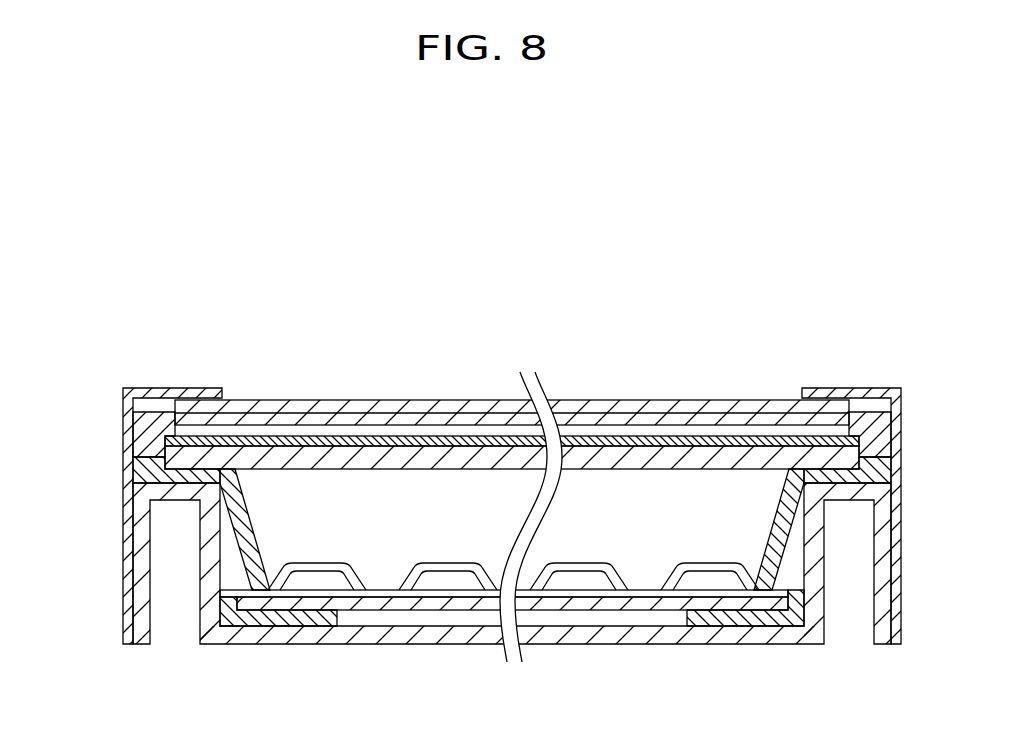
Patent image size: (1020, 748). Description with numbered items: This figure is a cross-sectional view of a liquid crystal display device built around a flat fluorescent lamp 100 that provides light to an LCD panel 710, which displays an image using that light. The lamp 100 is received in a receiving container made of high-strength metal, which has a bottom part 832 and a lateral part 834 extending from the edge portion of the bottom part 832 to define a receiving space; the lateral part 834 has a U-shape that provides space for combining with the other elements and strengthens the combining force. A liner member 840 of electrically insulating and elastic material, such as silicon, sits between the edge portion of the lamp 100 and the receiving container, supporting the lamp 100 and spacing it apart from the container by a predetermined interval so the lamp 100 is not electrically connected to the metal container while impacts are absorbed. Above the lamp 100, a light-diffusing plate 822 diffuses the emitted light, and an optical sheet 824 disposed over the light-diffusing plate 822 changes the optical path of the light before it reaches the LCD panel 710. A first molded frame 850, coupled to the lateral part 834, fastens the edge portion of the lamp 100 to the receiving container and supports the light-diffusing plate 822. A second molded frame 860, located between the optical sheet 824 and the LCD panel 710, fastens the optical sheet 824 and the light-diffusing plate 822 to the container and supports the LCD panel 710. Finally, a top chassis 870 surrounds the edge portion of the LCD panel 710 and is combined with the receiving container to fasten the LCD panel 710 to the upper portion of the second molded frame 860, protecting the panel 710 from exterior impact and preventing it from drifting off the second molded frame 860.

The flat fluorescent lamp 100 is at (460, 600).
The LCD panel 710 is at (443, 410).
The light-diffusing plate 822 is at (697, 456).
The optical sheet 824 is at (611, 443).
The bottom part 832 is at (377, 636).
The lateral part 834 is at (182, 488).
The liner member 840 is at (271, 616).
The first molded frame 850 is at (145, 466).
The second molded frame 860 is at (140, 433).
The top chassis 870 is at (140, 392).